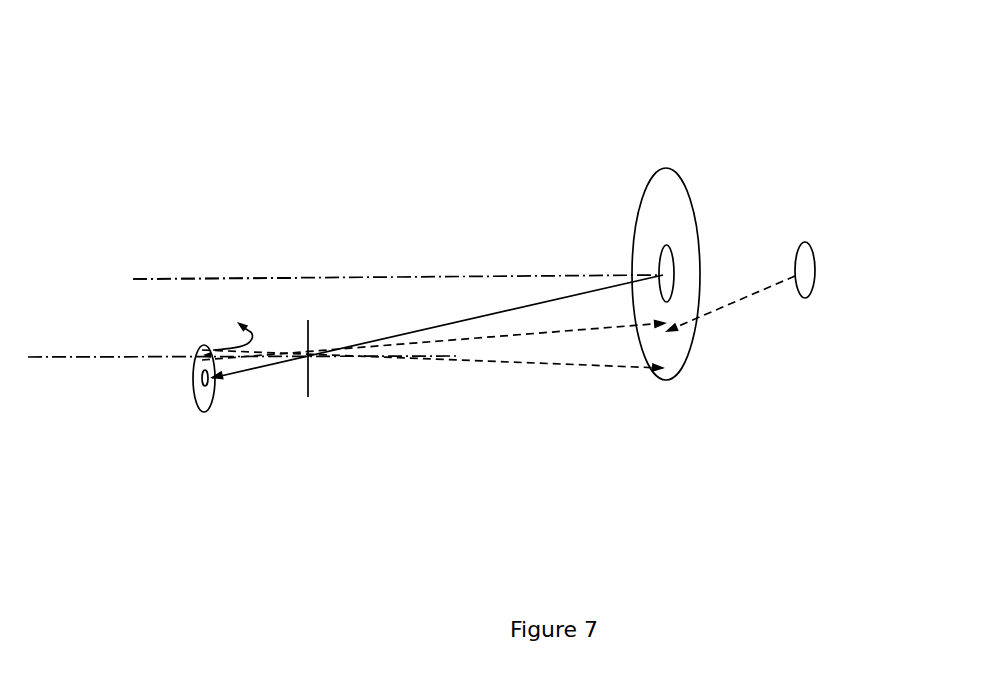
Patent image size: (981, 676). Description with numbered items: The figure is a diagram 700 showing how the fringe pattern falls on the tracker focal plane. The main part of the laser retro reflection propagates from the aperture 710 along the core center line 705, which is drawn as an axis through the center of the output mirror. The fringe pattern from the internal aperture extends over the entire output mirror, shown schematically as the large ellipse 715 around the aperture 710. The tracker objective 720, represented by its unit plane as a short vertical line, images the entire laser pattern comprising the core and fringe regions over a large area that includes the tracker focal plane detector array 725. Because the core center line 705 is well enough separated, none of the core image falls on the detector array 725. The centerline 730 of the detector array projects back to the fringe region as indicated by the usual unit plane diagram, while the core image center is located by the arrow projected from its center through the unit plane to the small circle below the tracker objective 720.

The diagram 700 is at (103, 28).
The center line 705 is at (362, 277).
The aperture 710 is at (672, 248).
The output mirror 715 is at (638, 230).
The tracker objective 720 is at (277, 364).
The tracker focal plane detector array 725 is at (216, 296).
The centerline 730 is at (122, 357).